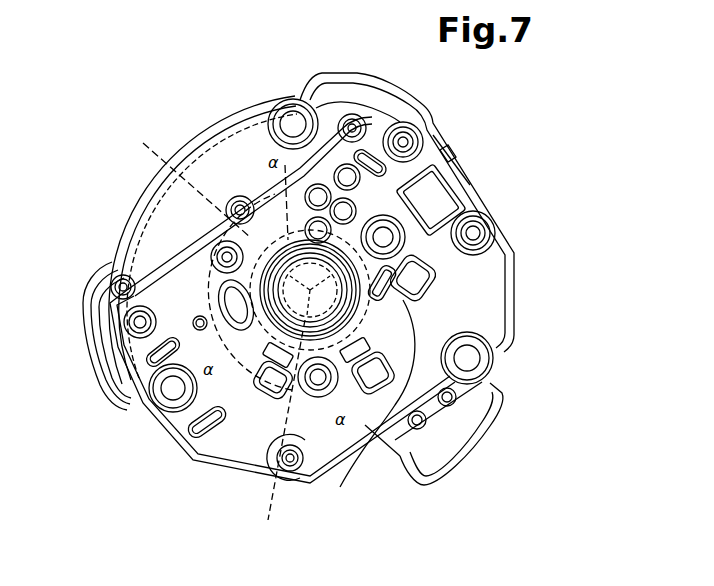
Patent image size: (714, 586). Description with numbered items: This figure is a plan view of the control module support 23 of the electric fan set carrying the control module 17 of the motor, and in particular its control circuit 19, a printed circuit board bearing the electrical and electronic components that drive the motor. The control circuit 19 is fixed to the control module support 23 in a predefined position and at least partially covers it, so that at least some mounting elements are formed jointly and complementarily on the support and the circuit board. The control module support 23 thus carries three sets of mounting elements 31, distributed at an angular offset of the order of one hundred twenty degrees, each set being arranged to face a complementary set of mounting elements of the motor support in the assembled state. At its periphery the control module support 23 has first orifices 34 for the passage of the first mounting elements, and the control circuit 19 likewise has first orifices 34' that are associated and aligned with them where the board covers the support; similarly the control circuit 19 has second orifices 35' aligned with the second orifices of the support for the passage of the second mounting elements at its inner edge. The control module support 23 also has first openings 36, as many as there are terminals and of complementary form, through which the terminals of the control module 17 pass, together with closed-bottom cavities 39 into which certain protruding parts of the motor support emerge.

The control module 17 is at (466, 184).
The control circuit 19 is at (497, 273).
The control module support 23 is at (118, 186).
The set of mounting elements 31 is at (241, 158).
The first orifices 34 is at (275, 95).
The first orifices 34' is at (344, 395).
The second orifices 35' is at (310, 251).
The first openings 36 is at (390, 375).
The cavities 39 is at (233, 297).